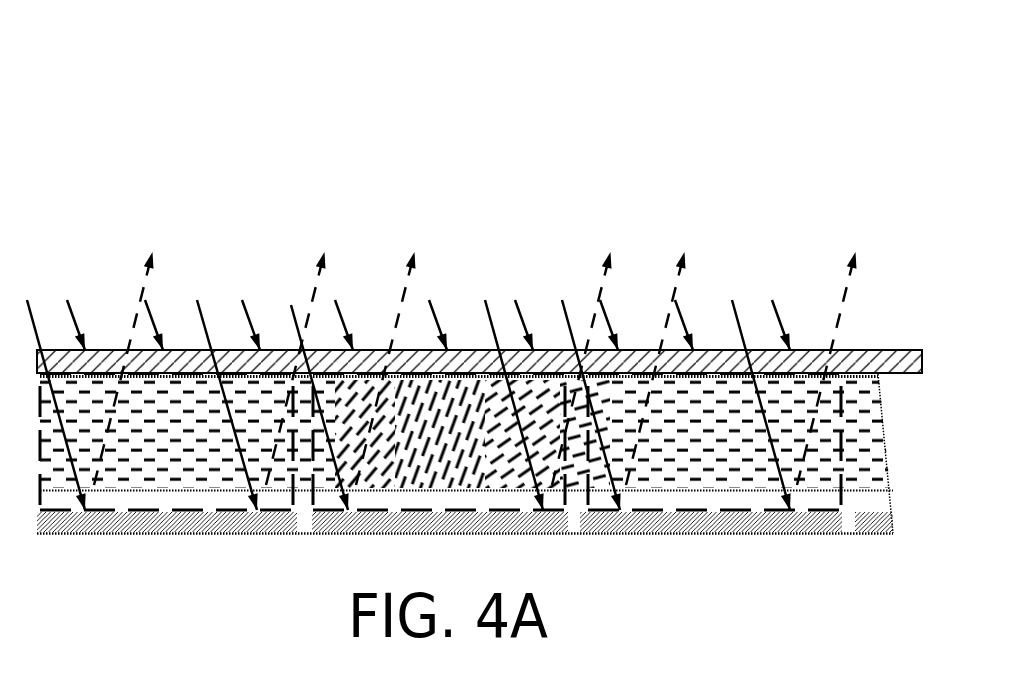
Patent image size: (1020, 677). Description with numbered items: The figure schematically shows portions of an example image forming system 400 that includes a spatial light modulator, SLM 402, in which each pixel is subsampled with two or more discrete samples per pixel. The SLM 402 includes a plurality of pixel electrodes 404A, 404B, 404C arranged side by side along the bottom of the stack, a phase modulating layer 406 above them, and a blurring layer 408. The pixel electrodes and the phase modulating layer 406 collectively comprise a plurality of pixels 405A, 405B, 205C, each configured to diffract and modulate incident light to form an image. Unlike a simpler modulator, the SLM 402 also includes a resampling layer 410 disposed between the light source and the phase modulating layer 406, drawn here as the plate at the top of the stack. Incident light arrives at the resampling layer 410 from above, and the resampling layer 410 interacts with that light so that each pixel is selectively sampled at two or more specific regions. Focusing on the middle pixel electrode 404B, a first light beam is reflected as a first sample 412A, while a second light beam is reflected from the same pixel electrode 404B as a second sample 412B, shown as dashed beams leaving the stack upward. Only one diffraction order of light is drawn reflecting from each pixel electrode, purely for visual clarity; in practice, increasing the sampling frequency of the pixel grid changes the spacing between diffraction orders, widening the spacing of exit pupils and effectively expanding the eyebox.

The image forming system 400 is at (118, 47).
The SLM 402 is at (130, 226).
The pixel electrode 404A is at (98, 532).
The pixel electrode 404B is at (340, 532).
The pixel electrode 404C is at (607, 532).
The pixel 405A is at (188, 512).
The pixel 405B is at (428, 512).
The third electrode segment 205C is at (690, 512).
The phase modulating layer 406 is at (873, 447).
The blurring layer 408 is at (887, 503).
The resampling layer 410 is at (862, 350).
The first sample 412A is at (412, 278).
The second sample 412B is at (607, 278).